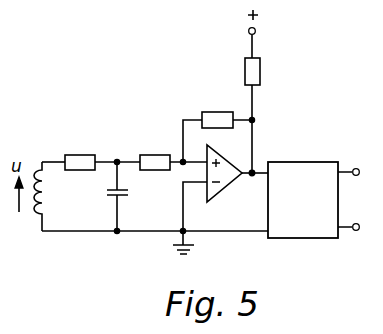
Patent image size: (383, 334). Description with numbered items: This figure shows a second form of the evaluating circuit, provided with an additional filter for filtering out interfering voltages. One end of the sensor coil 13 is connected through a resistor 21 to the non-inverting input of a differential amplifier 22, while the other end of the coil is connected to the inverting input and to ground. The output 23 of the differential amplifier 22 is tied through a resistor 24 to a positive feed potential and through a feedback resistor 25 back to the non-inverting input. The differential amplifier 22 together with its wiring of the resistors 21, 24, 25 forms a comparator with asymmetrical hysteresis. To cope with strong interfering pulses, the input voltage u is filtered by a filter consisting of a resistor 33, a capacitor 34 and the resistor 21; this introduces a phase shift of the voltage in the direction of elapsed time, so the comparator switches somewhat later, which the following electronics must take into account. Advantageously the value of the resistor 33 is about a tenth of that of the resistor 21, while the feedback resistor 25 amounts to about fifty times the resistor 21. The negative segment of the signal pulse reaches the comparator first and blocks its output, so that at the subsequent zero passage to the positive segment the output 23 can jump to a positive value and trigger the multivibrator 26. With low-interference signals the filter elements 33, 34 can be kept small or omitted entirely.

The sensor coil 13 is at (50, 210).
The resistor 21 is at (154, 155).
The differential amplifier 22 is at (218, 194).
The output 23 is at (256, 170).
The resistor 24 is at (261, 72).
The feedback resistor 25 is at (219, 112).
The multivibrator 26 is at (304, 162).
The resistor 33 is at (86, 155).
The capacitor 34 is at (125, 196).